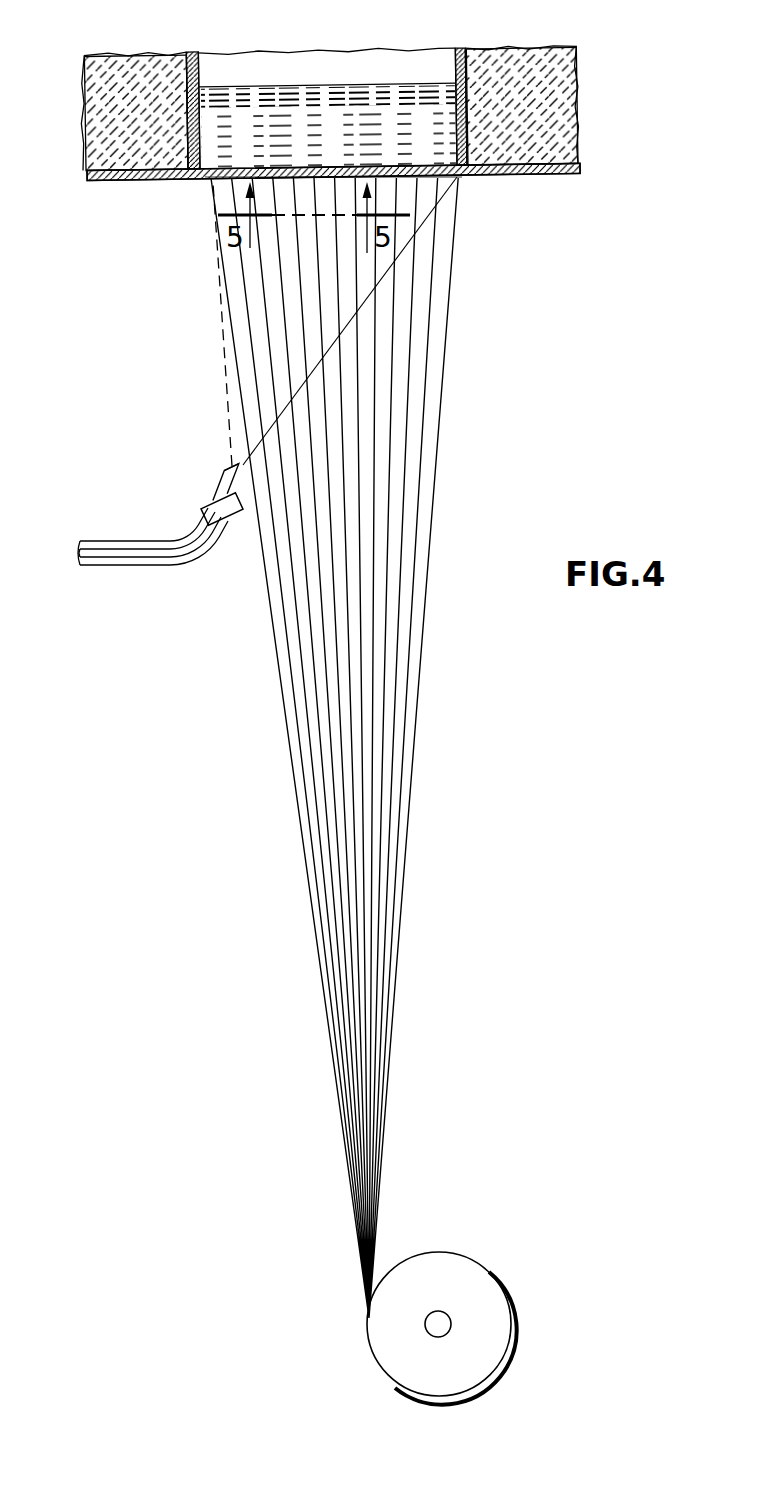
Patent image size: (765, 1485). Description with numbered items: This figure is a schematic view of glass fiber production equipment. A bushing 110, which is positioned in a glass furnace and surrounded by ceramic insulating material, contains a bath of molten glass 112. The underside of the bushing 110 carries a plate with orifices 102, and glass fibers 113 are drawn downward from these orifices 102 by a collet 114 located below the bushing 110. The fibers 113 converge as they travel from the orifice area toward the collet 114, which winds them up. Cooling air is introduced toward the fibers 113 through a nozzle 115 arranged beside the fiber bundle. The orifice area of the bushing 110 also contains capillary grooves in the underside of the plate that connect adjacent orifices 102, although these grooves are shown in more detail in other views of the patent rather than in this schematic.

The orifices 102 is at (218, 182).
The bushing 110 is at (533, 176).
The molten glass 112 is at (333, 90).
The glass fibers 113 is at (426, 412).
The collet 114 is at (480, 1287).
The nozzle 115 is at (205, 532).